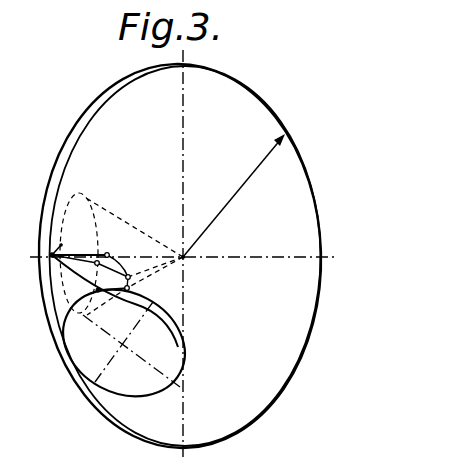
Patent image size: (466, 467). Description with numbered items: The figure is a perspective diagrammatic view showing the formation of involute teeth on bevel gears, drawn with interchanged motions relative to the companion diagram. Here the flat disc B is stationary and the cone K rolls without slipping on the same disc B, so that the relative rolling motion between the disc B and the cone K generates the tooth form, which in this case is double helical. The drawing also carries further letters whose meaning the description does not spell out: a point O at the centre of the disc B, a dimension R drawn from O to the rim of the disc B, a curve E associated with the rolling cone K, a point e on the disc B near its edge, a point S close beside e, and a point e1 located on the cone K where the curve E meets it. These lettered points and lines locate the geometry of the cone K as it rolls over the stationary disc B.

The flat disc B is at (179, 256).
The center of sphere O is at (192, 268).
The radius R is at (172, 224).
The cone K is at (150, 393).
The curve / path E is at (81, 273).
The pivot point e is at (50, 255).
The point S is at (63, 242).
The point e1 is at (101, 300).